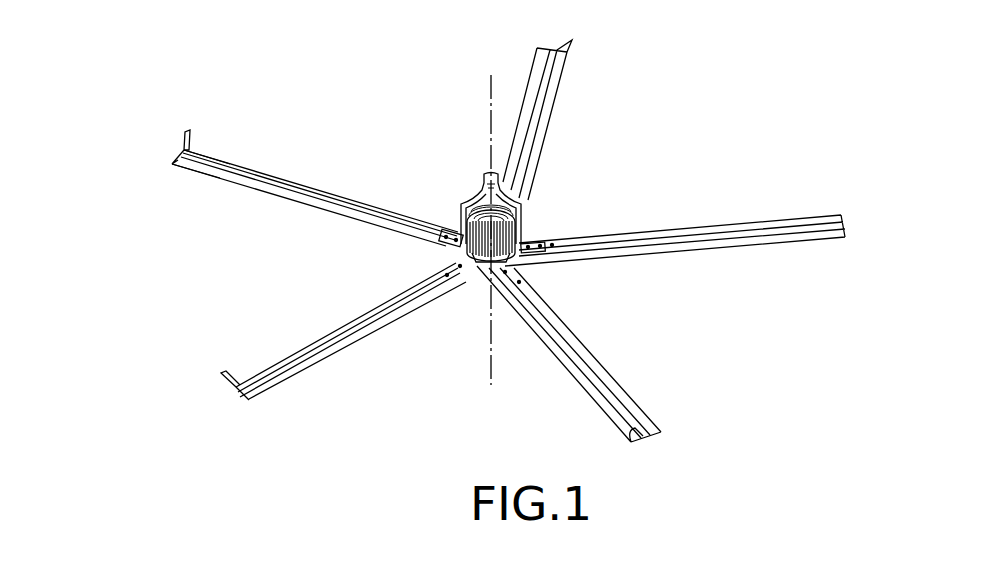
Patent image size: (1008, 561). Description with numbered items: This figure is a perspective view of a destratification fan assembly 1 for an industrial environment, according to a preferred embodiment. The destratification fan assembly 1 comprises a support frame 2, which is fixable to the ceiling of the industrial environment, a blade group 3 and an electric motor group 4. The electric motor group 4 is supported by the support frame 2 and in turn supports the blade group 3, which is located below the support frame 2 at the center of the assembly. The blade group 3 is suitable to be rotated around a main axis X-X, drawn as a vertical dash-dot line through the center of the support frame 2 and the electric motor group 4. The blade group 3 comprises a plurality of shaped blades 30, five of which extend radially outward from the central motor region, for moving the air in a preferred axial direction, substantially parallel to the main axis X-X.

The destratification fan assembly 1 is at (146, 430).
The support frame 2 is at (430, 158).
The blade group 3 is at (384, 258).
The shaped blades 30 is at (188, 203).
The electric motor group 4 is at (524, 224).
The main axis X-X is at (490, 375).